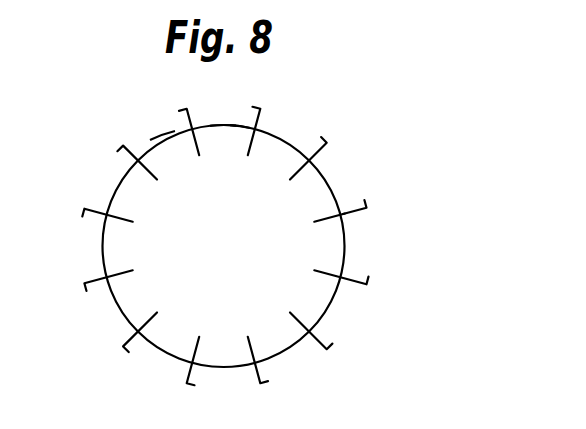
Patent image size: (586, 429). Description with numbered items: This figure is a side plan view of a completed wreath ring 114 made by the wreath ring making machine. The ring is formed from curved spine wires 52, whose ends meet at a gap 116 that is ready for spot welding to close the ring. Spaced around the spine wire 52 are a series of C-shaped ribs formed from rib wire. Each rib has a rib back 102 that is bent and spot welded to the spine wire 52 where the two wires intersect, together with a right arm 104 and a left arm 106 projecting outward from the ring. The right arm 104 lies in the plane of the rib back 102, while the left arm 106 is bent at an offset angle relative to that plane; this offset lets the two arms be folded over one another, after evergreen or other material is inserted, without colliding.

The spine wire 52 is at (163, 139).
The rib back 102 is at (348, 218).
The right arm 104 is at (314, 222).
The left arm 106 is at (353, 217).
The wreath ring 114 is at (360, 183).
The gap 116 is at (223, 125).